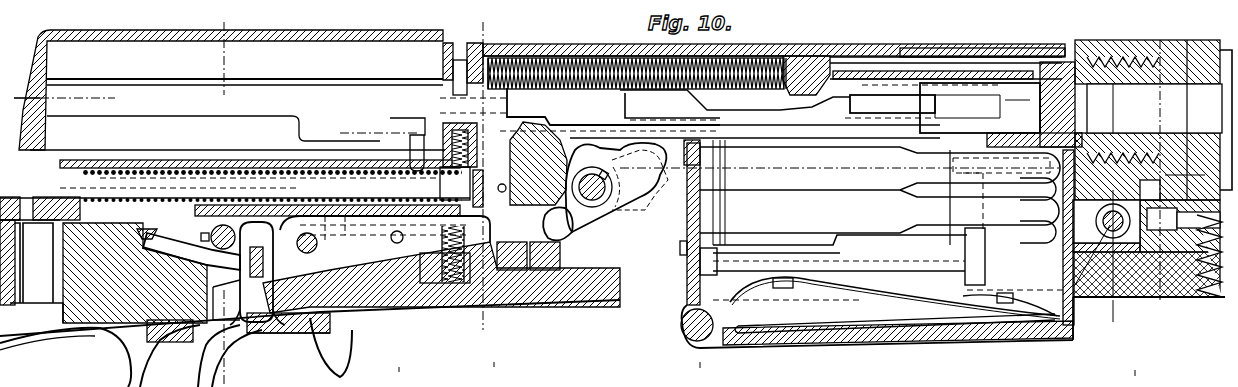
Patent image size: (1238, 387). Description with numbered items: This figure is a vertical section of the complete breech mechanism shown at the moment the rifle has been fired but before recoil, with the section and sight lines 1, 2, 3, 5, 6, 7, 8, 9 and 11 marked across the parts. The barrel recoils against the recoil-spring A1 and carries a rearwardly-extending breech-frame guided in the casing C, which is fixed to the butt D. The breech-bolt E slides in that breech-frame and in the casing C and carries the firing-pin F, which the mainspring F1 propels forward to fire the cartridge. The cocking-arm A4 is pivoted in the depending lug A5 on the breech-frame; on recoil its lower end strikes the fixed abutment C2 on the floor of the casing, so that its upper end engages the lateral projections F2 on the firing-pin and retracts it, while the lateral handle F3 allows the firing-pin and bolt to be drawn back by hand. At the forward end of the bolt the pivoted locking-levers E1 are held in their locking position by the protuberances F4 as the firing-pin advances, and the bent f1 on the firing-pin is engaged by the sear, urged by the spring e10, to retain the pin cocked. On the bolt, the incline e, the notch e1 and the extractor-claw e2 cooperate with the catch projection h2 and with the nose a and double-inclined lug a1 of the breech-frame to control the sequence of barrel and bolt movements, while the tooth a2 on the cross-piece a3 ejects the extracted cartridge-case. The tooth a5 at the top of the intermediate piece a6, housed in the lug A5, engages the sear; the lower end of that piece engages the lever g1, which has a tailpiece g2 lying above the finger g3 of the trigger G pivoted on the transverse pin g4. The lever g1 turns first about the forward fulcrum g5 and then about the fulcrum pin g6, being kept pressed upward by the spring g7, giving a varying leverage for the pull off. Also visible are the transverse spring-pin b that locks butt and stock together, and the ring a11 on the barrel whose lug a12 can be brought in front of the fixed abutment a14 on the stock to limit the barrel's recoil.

The barrel axis / bore 1 is at (1130, 108).
The section line 2 is at (400, 377).
The section line 3 is at (495, 373).
The section line 5 is at (223, 196).
The section line 6 is at (475, 180).
The section line 7 is at (1106, 214).
The section line 8 is at (1181, 150).
The section line 9 is at (699, 374).
The section line 11 is at (1137, 378).
The recoil-spring A1 is at (95, 172).
The cocking-arm A4 is at (583, 227).
The depending lug A5 is at (630, 196).
The casing C is at (447, 38).
The fixed abutment C2 is at (545, 213).
The butt D is at (310, 303).
The breech-bolt E is at (499, 48).
The locking-levers E1 is at (970, 82).
The firing-pin F is at (793, 113).
The mainspring F1 is at (578, 53).
The lateral projections F2 is at (600, 123).
The lateral handle F3 is at (920, 52).
The protuberances F4 is at (1001, 115).
The trigger G is at (249, 294).
The nose a is at (590, 177).
The double-inclined lug a1 is at (370, 133).
The lug or tooth a2 is at (700, 127).
The cross-piece a3 is at (702, 152).
The tooth a5 is at (493, 160).
The intermediate piece a6 is at (500, 213).
The ring a11 is at (1178, 50).
The lug a12 is at (1175, 190).
The fixed abutment a14 is at (1145, 225).
The transverse spring-pin b is at (1067, 332).
The incline e is at (738, 64).
The notch e1 is at (813, 135).
The extractor-claw e2 is at (1062, 60).
The spring e10 is at (455, 133).
The bent f1 is at (537, 123).
The lever g1 is at (441, 264).
The tailpiece g2 is at (148, 229).
The finger g3 is at (182, 235).
The transverse pin g4 is at (227, 226).
The fulcrum g5 is at (397, 243).
The fulcrum g6 is at (306, 255).
The spring g7 is at (455, 284).
The projection h2 is at (415, 140).